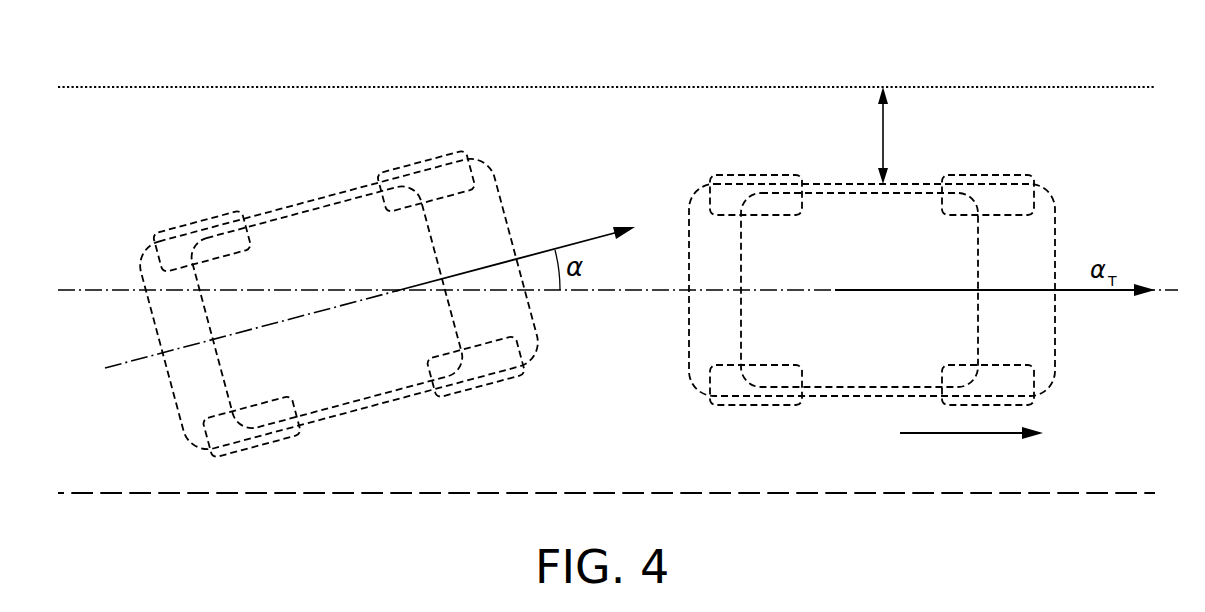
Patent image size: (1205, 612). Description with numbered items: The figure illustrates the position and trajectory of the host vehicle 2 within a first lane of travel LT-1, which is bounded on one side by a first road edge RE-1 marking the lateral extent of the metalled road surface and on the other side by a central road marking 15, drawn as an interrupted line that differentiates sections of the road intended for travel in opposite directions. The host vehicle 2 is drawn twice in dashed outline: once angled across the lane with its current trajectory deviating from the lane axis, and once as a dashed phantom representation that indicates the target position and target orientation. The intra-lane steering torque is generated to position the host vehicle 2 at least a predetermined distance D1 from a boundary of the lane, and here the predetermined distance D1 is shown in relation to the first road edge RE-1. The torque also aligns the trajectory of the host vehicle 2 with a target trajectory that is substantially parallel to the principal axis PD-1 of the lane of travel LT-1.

The host vehicle 2 is at (308, 231).
The central road marking 15 is at (1099, 493).
The first road edge RE-1 is at (1066, 87).
The first lane of travel LT-1 is at (107, 176).
The predetermined distance D1 is at (900, 135).
The principal axis of the lane of travel PD-1 is at (971, 446).